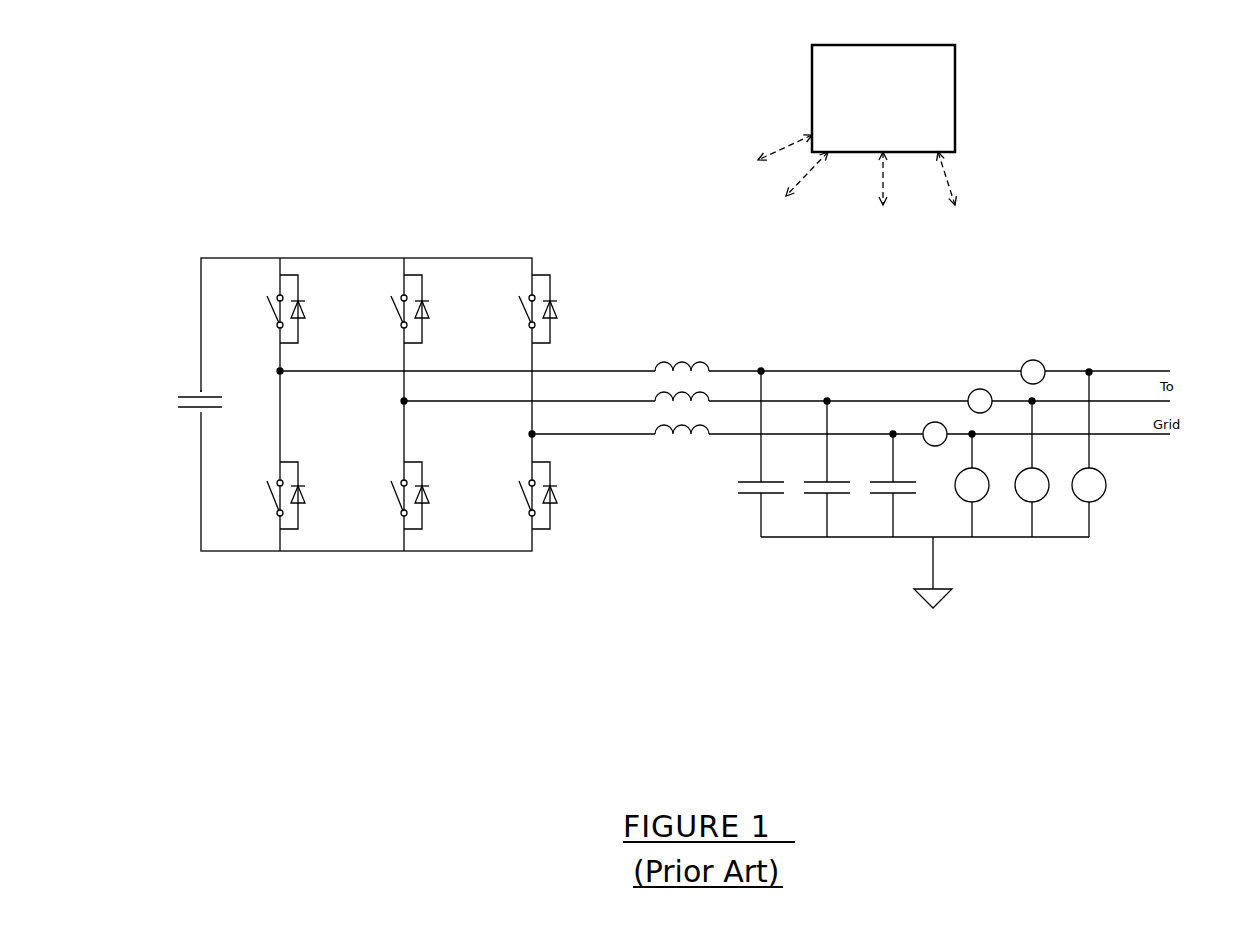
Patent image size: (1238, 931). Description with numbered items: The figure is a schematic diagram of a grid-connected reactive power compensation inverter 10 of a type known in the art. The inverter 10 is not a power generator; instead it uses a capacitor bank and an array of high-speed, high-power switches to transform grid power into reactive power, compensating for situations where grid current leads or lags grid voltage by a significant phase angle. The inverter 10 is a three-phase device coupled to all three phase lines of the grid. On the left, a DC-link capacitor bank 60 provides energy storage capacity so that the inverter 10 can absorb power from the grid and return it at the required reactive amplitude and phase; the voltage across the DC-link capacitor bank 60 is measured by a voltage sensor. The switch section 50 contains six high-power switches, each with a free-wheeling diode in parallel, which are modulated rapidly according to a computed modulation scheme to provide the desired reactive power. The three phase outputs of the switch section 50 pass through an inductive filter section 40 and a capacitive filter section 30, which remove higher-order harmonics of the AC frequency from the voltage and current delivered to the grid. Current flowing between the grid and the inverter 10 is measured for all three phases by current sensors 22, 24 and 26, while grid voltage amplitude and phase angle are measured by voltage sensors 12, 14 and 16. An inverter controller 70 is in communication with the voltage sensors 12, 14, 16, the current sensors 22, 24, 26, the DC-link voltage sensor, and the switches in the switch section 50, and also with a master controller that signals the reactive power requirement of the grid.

The grid-connected reactive power compensation inverter 10 is at (910, 696).
The voltage sensor 12 is at (1093, 501).
The voltage sensor 14 is at (1036, 501).
The voltage sensor 16 is at (976, 501).
The current sensor 22 is at (1021, 367).
The current sensor 24 is at (968, 397).
The current sensor 26 is at (923, 430).
The capacitive filter section 30 is at (704, 489).
The inductive filter section 40 is at (680, 298).
The switch section 50 is at (440, 208).
The DC-link capacitor bank 60 is at (174, 366).
The inverter controller 70 is at (812, 62).